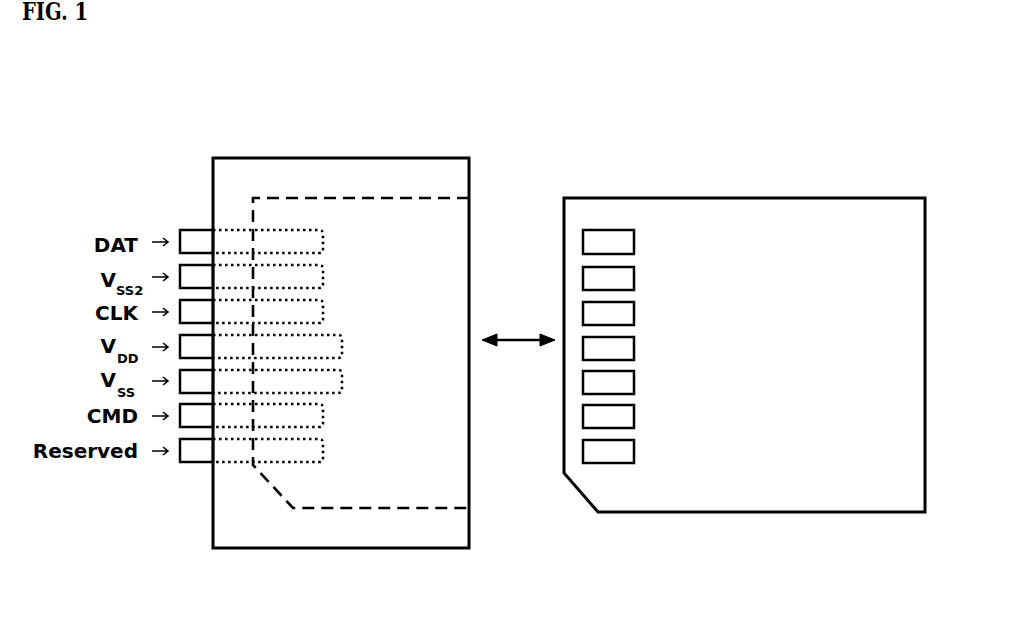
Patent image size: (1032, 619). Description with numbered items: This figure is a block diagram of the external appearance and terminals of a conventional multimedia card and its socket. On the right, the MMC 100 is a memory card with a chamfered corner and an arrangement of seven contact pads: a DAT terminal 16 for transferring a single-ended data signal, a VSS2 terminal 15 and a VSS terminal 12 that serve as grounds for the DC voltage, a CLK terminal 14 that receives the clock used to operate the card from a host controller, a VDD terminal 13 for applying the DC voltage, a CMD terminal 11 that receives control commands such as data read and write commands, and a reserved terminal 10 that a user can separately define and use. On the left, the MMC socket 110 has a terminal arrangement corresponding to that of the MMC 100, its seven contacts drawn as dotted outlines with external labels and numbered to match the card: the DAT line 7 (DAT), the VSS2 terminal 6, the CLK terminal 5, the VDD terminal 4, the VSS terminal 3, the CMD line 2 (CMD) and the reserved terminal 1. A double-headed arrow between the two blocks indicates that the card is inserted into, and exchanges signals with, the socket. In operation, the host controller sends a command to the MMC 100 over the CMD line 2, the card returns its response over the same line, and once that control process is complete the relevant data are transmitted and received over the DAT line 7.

The MMC socket 110 is at (375, 157).
The MMC 100 is at (626, 198).
The reserved terminal 1 is at (271, 451).
The CMD line 2 is at (271, 416).
The VSS terminal 3 is at (273, 382).
The VDD terminal 4 is at (273, 347).
The CLK terminal 5 is at (271, 312).
The VSS2 terminal 6 is at (271, 277).
The DAT line 7 is at (271, 242).
The reserved terminal 10 is at (628, 452).
The CMD terminal 11 is at (628, 417).
The VSS terminal 12 is at (628, 383).
The VDD terminal 13 is at (628, 349).
The CLK terminal 14 is at (628, 314).
The VSS2 terminal 15 is at (628, 279).
The DAT terminal 16 is at (628, 243).